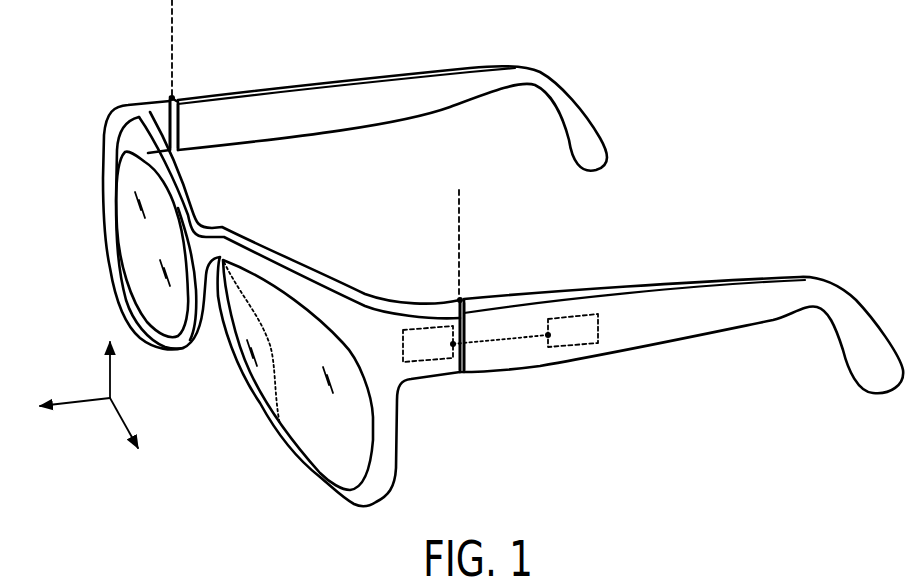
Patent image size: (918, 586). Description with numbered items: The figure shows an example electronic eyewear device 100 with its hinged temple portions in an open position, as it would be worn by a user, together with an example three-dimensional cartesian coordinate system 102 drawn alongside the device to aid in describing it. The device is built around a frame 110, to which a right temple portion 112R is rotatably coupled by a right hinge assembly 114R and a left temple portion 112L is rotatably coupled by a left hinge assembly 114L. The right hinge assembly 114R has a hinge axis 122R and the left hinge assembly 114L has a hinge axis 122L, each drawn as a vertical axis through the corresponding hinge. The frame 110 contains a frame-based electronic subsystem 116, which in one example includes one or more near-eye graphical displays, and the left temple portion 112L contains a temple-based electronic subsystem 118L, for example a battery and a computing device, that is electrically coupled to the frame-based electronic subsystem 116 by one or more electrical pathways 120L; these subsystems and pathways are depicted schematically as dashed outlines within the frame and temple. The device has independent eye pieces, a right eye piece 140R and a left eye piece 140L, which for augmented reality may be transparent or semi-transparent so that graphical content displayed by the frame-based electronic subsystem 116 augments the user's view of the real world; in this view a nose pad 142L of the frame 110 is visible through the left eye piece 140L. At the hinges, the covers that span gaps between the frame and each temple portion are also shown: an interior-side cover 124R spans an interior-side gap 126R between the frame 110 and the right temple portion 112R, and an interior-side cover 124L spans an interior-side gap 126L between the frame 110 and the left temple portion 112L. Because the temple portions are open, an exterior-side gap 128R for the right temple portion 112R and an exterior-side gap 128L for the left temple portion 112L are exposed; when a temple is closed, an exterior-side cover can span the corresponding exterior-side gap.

The electronic eyewear device 100 is at (450, 469).
The three-dimensional cartesian coordinate system 102 is at (85, 395).
The frame 110 is at (283, 258).
The right temple portion 112R is at (340, 100).
The left temple portion 112L is at (658, 310).
The right hinge assembly 114R is at (189, 85).
The left hinge assembly 114L is at (465, 296).
The frame-based electronic subsystem 116 is at (433, 353).
The temple-based electronic subsystem 118L is at (575, 337).
The electrical pathways 120L is at (503, 333).
The hinge axis 122R is at (174, 47).
The hinge axis 122L is at (459, 243).
The interior-side cover 124R is at (185, 118).
The interior-side cover 124L is at (452, 296).
The interior-side gap 126R is at (180, 132).
The interior-side gap 126L is at (452, 304).
The exterior-side gap 128R is at (168, 92).
The exterior-side gap 128L is at (469, 357).
The right eye piece 140R is at (147, 250).
The left eye piece 140L is at (310, 440).
The nose pad 142L is at (265, 372).